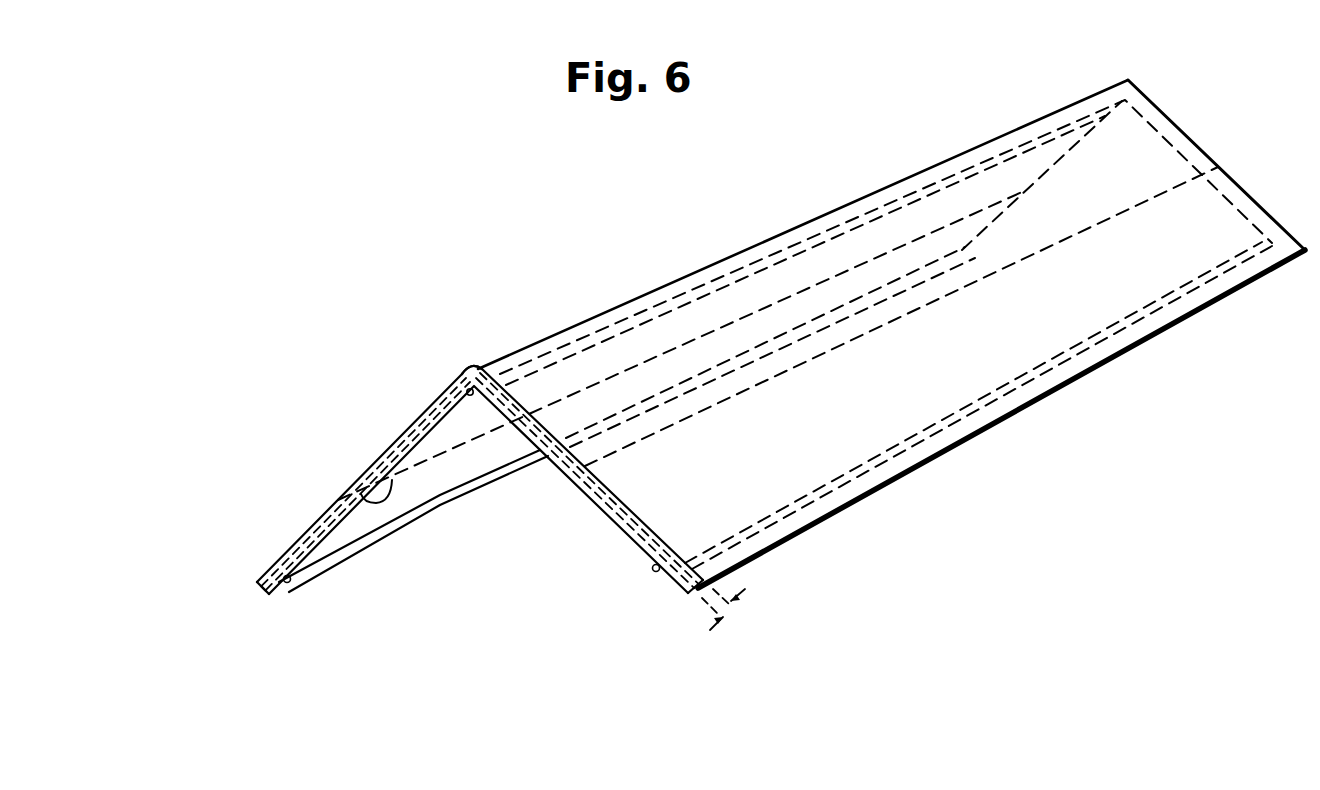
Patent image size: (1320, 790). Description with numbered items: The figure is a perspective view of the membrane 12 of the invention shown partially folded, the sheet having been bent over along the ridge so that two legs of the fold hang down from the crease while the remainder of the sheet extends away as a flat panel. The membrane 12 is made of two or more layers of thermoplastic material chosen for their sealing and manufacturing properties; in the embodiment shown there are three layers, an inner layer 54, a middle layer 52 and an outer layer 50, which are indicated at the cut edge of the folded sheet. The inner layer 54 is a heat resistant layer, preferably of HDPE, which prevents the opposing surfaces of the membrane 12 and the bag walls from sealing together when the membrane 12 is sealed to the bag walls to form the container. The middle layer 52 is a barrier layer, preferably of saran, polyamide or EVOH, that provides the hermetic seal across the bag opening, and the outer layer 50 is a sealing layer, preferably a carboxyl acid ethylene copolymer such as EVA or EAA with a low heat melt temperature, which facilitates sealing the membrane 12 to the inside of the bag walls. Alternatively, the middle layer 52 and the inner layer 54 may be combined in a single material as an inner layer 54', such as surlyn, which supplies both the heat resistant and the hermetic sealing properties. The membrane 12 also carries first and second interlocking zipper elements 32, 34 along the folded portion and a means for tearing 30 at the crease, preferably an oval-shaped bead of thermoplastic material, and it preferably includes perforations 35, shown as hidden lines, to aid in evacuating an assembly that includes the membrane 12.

The membrane 12 is at (723, 396).
The means for tearing 30 is at (466, 374).
The first interlocking zipper element 32 is at (327, 571).
The second interlocking zipper element 34 is at (654, 569).
The perforations 35 is at (337, 500).
The outer layer 50 is at (258, 585).
The middle layer 52 is at (262, 590).
The inner layer 54 is at (240, 649).
The inner layer 54' is at (777, 648).